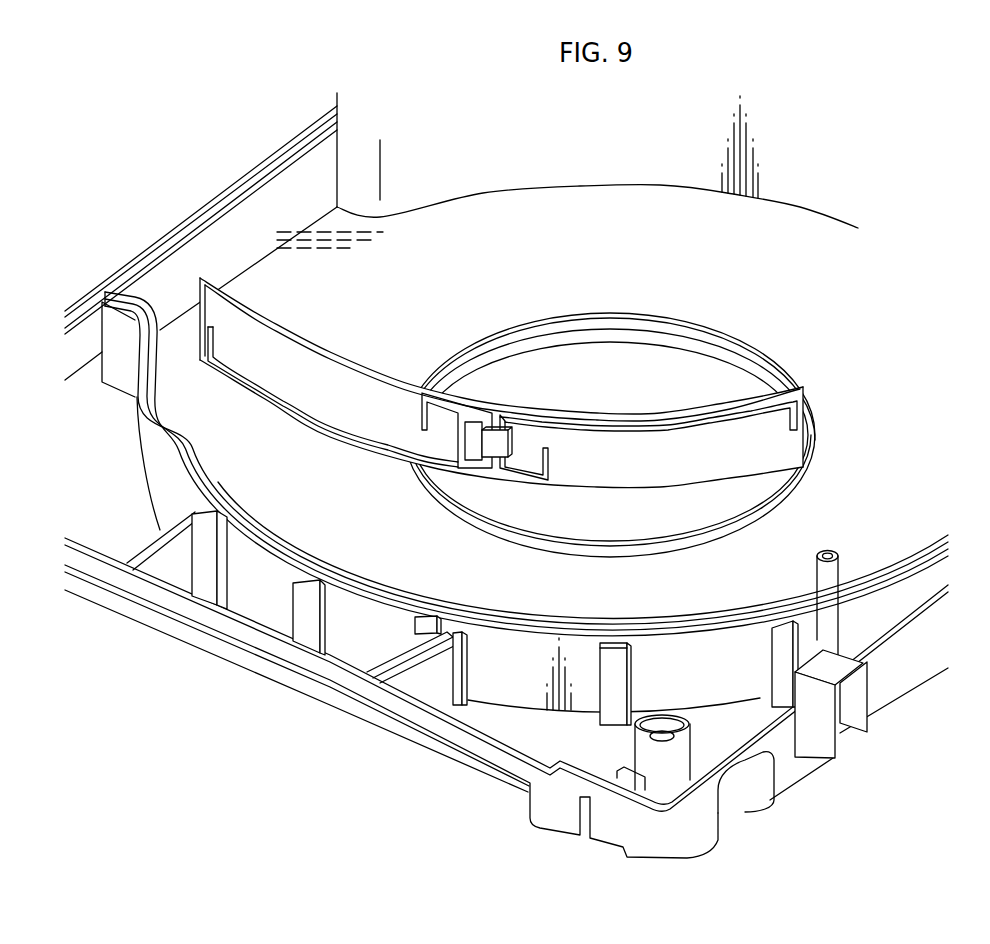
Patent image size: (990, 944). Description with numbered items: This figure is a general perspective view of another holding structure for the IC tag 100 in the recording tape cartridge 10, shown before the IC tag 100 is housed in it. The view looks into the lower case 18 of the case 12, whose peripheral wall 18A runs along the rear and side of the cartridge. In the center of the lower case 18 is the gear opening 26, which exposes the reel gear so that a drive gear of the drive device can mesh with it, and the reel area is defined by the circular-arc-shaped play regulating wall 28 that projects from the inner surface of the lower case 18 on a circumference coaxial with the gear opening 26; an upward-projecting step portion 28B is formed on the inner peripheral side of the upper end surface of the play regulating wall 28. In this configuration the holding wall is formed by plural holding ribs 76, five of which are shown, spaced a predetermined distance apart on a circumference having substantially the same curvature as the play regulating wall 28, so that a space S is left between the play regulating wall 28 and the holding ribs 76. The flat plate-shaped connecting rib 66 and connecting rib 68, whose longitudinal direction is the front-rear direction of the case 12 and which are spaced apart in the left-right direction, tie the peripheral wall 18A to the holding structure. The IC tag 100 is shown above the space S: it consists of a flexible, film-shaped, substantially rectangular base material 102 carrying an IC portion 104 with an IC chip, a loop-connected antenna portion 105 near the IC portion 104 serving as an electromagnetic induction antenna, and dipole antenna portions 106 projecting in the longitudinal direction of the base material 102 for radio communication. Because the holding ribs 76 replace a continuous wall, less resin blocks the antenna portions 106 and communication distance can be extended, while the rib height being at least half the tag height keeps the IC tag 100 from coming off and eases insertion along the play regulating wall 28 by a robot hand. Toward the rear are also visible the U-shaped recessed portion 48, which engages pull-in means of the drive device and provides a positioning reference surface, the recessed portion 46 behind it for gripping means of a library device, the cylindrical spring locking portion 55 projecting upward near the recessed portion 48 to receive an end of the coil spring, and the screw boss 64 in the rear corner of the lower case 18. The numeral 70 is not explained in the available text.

The recording tape cartridge 10 is at (141, 142).
The case 12 is at (272, 150).
The lower case 18 is at (201, 203).
The peripheral wall 18A is at (267, 210).
The play regulating wall 28 is at (482, 172).
The step portion 28B is at (163, 428).
The gear opening 26 is at (652, 337).
The IC tag 100 is at (539, 408).
The base material 102 is at (270, 353).
The IC portion 104 is at (500, 445).
The antenna portion 105 is at (458, 440).
The antenna portions 106 is at (317, 430).
The connecting rib 66 is at (163, 562).
The connecting rib 68 is at (422, 672).
The bottom plate 70 is at (302, 618).
The holding ribs 76 is at (208, 583).
The spring locking portion 55 is at (830, 575).
The recessed portion 48 is at (855, 693).
The recessed portion 46 is at (750, 787).
The screw boss 64 is at (665, 765).
The space S is at (215, 520).